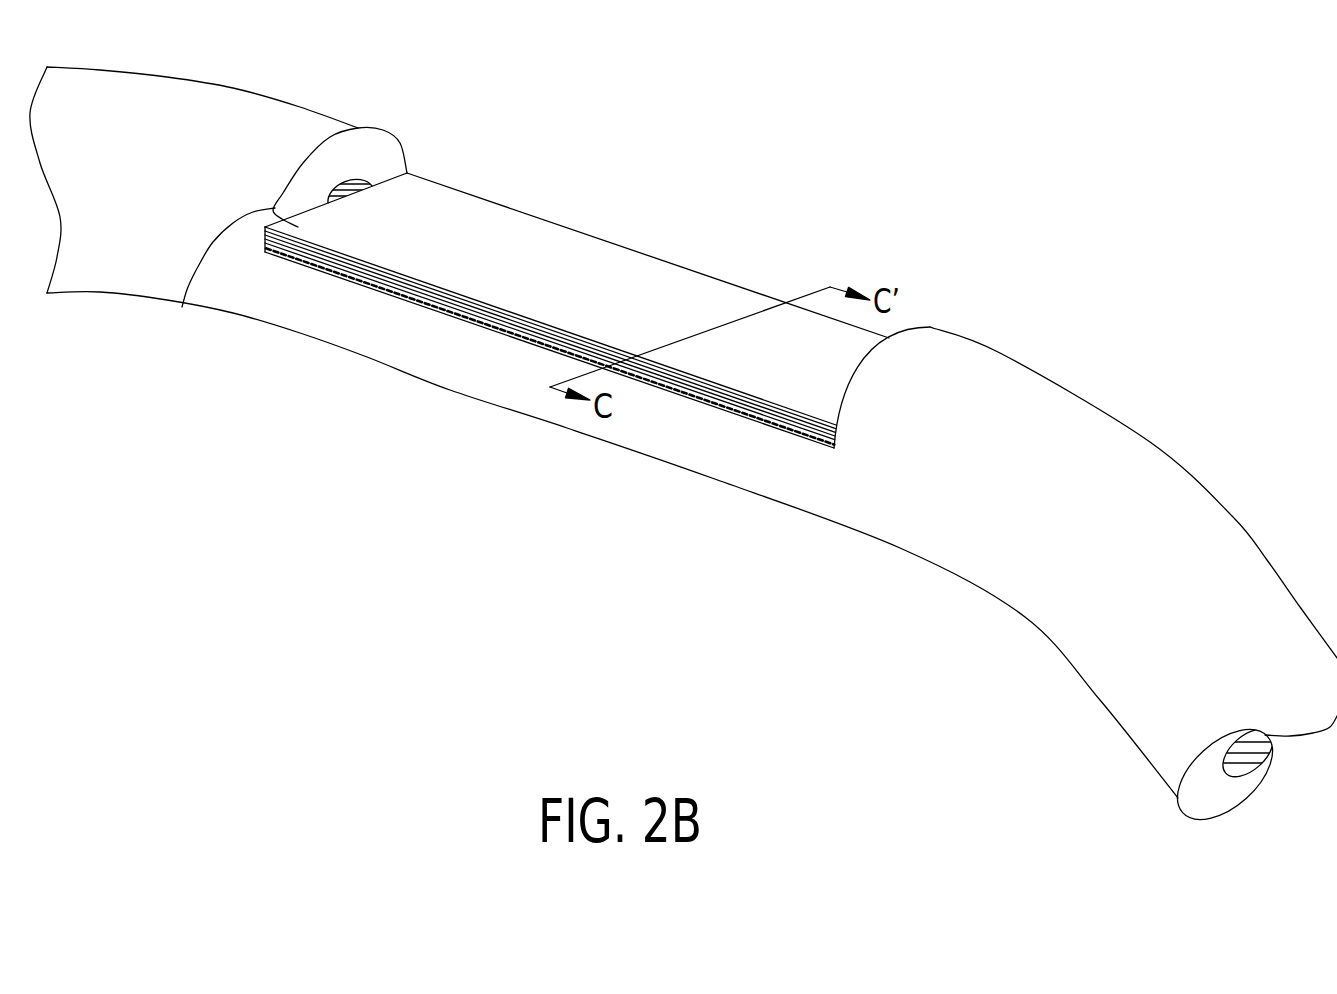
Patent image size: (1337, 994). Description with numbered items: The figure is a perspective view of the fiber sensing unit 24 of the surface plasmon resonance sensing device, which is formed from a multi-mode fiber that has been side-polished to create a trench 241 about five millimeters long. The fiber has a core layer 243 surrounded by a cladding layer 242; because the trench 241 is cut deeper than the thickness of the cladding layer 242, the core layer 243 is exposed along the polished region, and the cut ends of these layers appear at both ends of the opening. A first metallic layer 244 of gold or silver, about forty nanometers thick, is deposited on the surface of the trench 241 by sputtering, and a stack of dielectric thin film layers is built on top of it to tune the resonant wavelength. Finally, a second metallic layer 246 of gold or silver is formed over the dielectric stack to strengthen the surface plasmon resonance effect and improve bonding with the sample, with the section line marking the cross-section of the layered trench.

The fiber sensing unit 24 is at (975, 218).
The trench 241 is at (695, 252).
The cladding layer 242 is at (352, 150).
The core layer 243 is at (358, 175).
The first metallic layer 244 is at (288, 257).
The second metallic layer 246 is at (182, 307).